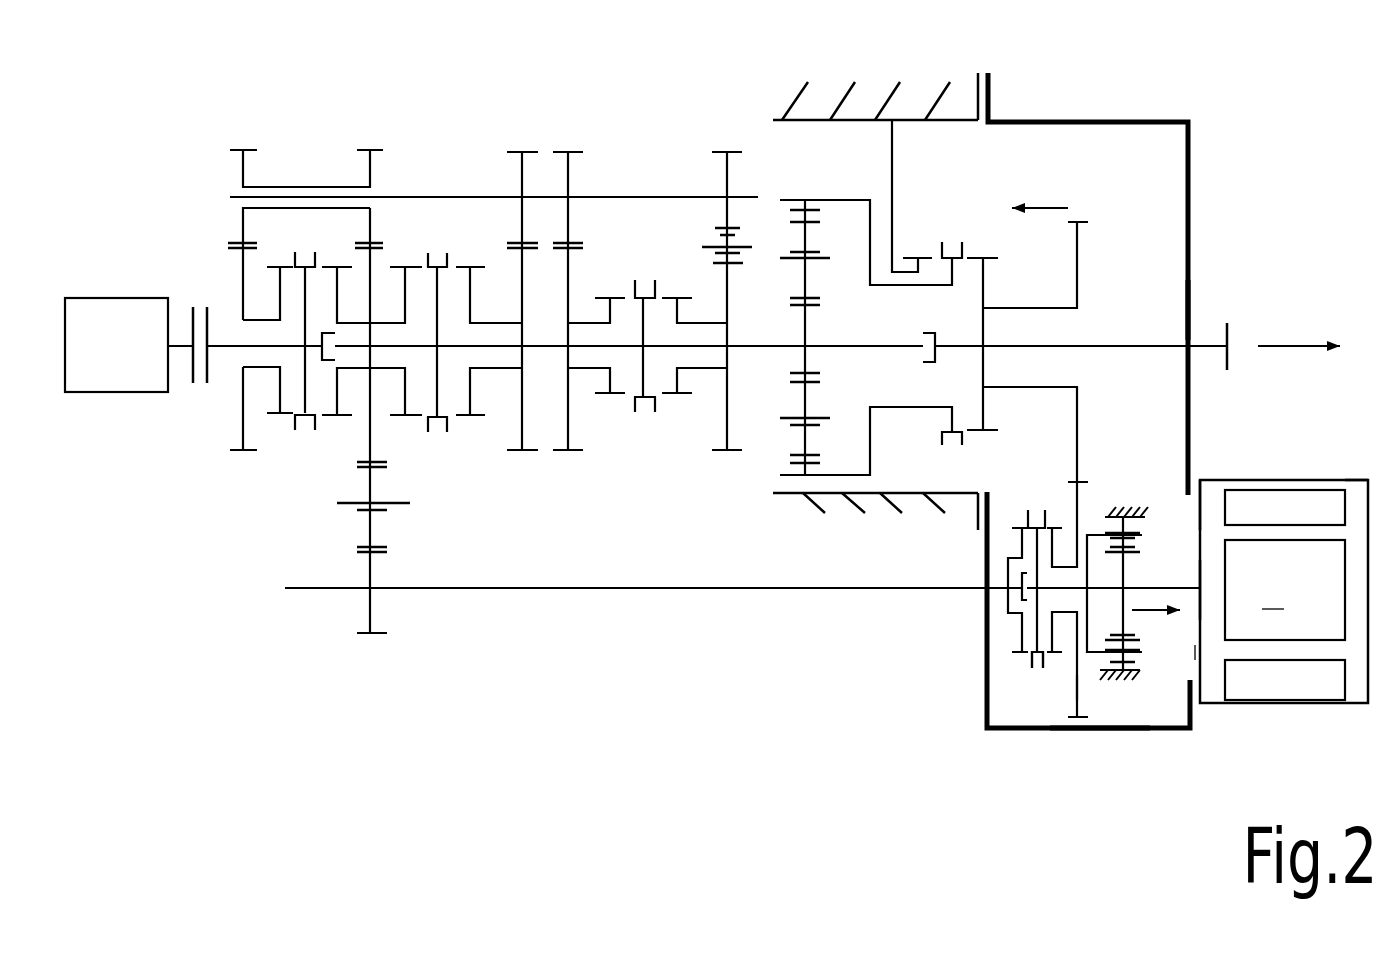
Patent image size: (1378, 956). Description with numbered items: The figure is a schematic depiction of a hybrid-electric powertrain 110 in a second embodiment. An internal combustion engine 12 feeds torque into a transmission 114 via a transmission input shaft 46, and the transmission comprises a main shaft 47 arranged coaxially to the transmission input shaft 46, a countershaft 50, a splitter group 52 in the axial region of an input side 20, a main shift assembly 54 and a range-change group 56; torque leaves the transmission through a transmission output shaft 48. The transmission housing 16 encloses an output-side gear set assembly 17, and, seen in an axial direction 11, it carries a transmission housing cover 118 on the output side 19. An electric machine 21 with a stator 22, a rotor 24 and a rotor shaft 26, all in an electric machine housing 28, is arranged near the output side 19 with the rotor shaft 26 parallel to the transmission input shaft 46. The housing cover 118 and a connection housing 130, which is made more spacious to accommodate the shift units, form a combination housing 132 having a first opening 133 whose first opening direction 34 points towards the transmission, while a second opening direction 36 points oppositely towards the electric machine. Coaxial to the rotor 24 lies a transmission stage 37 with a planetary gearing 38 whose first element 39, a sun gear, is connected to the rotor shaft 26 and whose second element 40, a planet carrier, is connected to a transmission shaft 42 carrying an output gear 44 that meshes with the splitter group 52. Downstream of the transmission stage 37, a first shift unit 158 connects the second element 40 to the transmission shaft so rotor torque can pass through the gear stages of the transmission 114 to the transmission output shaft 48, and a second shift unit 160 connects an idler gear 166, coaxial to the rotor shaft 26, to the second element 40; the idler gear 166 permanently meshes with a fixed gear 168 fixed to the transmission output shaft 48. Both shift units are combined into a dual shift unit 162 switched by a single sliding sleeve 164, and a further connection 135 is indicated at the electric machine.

The axial direction 11 is at (1287, 345).
The internal combustion engine 12 is at (100, 315).
The transmission housing 16 is at (855, 115).
The output-side gear set assembly 17 is at (817, 187).
The output side 19 is at (922, 160).
The input side 20 is at (280, 122).
The electric machine 21 is at (1330, 455).
The stator 22 is at (1270, 490).
The rotor 24 is at (1273, 598).
The rotor shaft 26 is at (1200, 597).
The electric machine housing 28 is at (1200, 490).
The first opening direction 34 is at (1068, 206).
The second opening direction 36 is at (1140, 728).
The transmission stage 37 is at (1113, 497).
The planetary gearing 38 is at (1113, 500).
The first element 39 is at (1116, 593).
The second element 40 is at (1088, 535).
The transmission shaft 42 is at (640, 590).
The output gear 44 is at (375, 578).
The transmission input shaft 46 is at (232, 340).
The main shaft 47 is at (800, 328).
The transmission output shaft 48 is at (1207, 345).
The countershaft 50 is at (476, 195).
The splitter group 52 is at (262, 470).
The main shift assembly 54 is at (608, 460).
The range-change group 56 is at (758, 460).
The hybrid-electric powertrain 110 is at (730, 88).
The transmission 114 is at (493, 108).
The transmission housing cover 118 is at (1060, 105).
The connection housing 130 is at (958, 632).
The combination housing 132 is at (1190, 310).
The first opening 133 is at (993, 228).
The connection 135 is at (1195, 645).
The first shift unit 158 is at (1025, 518).
The second shift unit 160 is at (1053, 660).
The dual shift unit 162 is at (1043, 677).
The sliding sleeve 164 is at (1040, 662).
The idler gear 166 is at (1078, 672).
The fixed gear 168 is at (1078, 278).